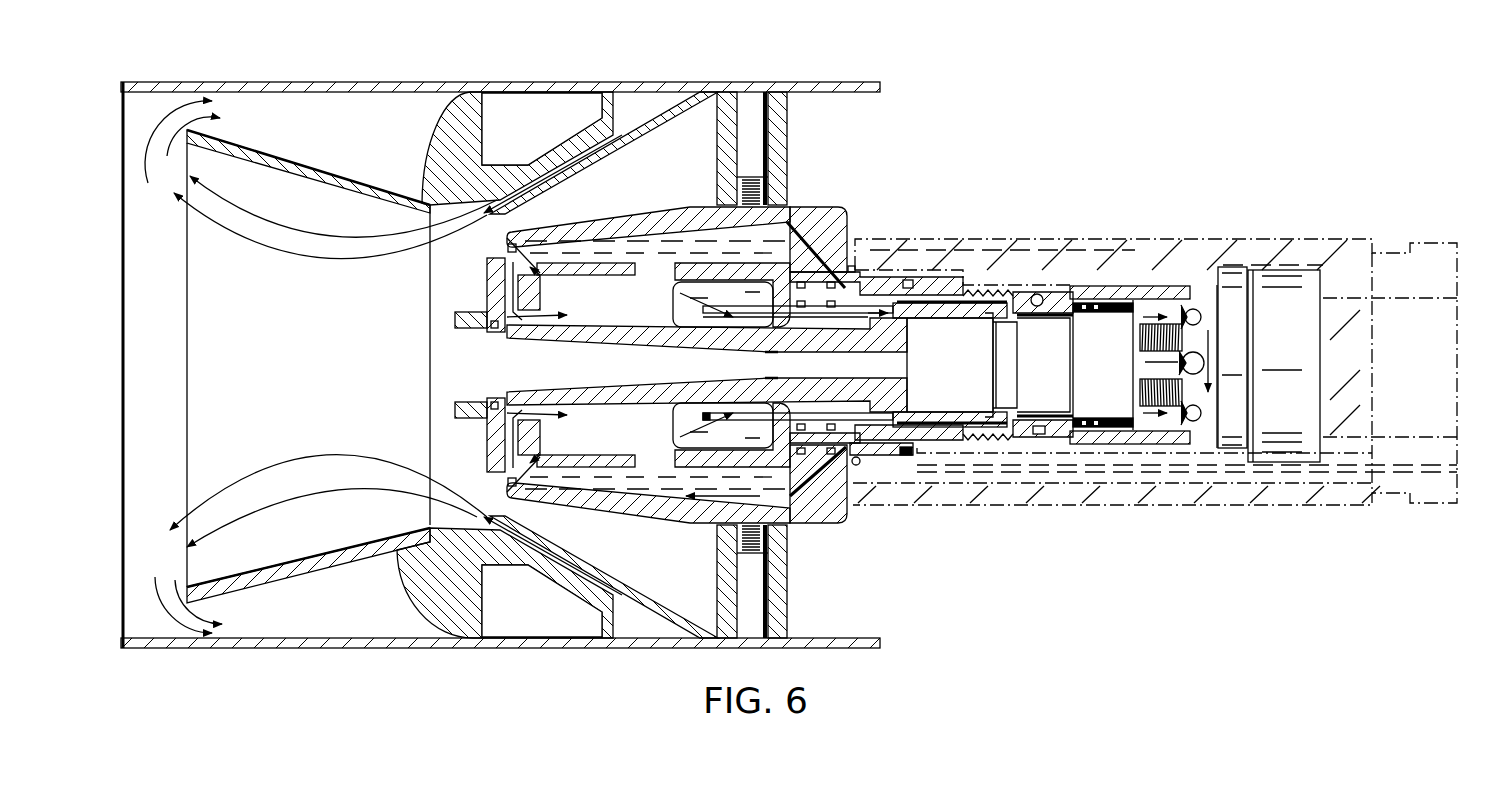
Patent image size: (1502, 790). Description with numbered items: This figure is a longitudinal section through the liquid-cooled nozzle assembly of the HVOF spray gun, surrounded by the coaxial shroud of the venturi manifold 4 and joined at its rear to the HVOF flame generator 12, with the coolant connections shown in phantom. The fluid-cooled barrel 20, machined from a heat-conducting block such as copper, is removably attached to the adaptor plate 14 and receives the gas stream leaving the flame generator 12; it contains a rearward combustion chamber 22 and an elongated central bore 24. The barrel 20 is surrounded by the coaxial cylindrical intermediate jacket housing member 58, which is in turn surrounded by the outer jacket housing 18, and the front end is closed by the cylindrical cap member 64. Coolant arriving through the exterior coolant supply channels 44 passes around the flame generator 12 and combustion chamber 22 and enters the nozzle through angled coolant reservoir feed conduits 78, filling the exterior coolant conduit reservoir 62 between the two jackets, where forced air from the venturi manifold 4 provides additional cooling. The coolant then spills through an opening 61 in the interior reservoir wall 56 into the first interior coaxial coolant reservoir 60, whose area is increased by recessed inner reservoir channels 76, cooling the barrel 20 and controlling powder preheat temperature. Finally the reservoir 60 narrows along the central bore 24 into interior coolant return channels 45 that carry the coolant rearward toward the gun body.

The venturi manifold 4 is at (330, 165).
The HVOF flame generator 12 is at (1120, 337).
The adaptor plate 14 is at (1003, 358).
The outer jacket housing 18 is at (687, 217).
The fluid-cooled barrel 20 is at (680, 348).
The combustion chamber 22 is at (965, 375).
The central bore 24 is at (812, 378).
The exterior coolant supply channels 44 is at (1097, 480).
The interior coolant return channels 45 is at (818, 407).
The interior reservoir wall 56 is at (645, 330).
The intermediate jacket housing member 58 is at (618, 274).
The first interior coaxial coolant reservoir 60 is at (748, 313).
The opening 61 is at (643, 268).
The exterior coolant conduit reservoir 62 is at (718, 262).
The cylindrical cap member 64 is at (532, 298).
The inner reservoir channels 76 is at (768, 350).
The coolant reservoir feed conduits 78 is at (800, 222).